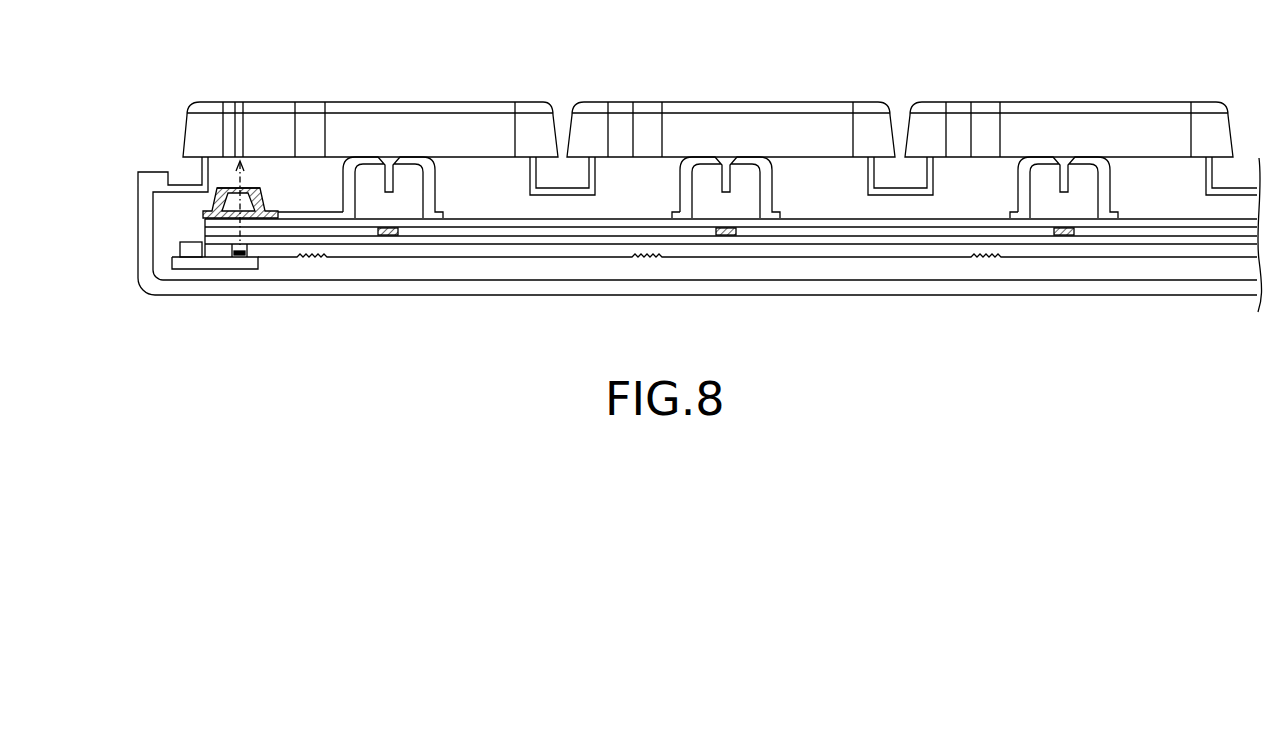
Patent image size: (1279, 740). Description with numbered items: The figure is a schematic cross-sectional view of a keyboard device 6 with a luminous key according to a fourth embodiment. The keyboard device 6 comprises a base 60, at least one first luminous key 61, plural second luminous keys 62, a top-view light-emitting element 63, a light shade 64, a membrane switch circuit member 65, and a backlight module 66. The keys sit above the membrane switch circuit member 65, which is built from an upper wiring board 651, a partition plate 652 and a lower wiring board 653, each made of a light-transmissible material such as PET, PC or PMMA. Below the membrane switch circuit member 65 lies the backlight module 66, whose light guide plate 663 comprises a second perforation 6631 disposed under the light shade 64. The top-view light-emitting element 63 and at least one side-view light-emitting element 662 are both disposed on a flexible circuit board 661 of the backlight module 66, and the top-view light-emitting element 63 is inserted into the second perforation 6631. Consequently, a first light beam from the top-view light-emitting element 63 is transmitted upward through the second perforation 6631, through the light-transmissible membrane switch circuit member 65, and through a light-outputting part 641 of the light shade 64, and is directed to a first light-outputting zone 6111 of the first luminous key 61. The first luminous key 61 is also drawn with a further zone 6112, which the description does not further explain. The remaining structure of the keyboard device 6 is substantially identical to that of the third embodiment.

The keyboard device 6 is at (668, 180).
The base 60 is at (489, 292).
The first luminous key 61 is at (352, 108).
The first light-outputting zone 6111 is at (236, 104).
The keycap second portion 6112 is at (313, 106).
The second luminous key 62 is at (812, 93).
The top-view light-emitting element 63 is at (248, 253).
The light shade 64 is at (235, 168).
The light-outputting part 641 is at (238, 187).
The membrane switch circuit member 65 is at (731, 281).
The upper wiring board 651 is at (895, 223).
The partition plate 652 is at (955, 232).
The lower wiring board 653 is at (1007, 238).
The backlight module 66 is at (666, 299).
The flexible circuit board 661 is at (186, 267).
The side-view light-emitting element 662 is at (186, 250).
The light guide plate 663 is at (721, 261).
The second perforation 6631 is at (265, 251).